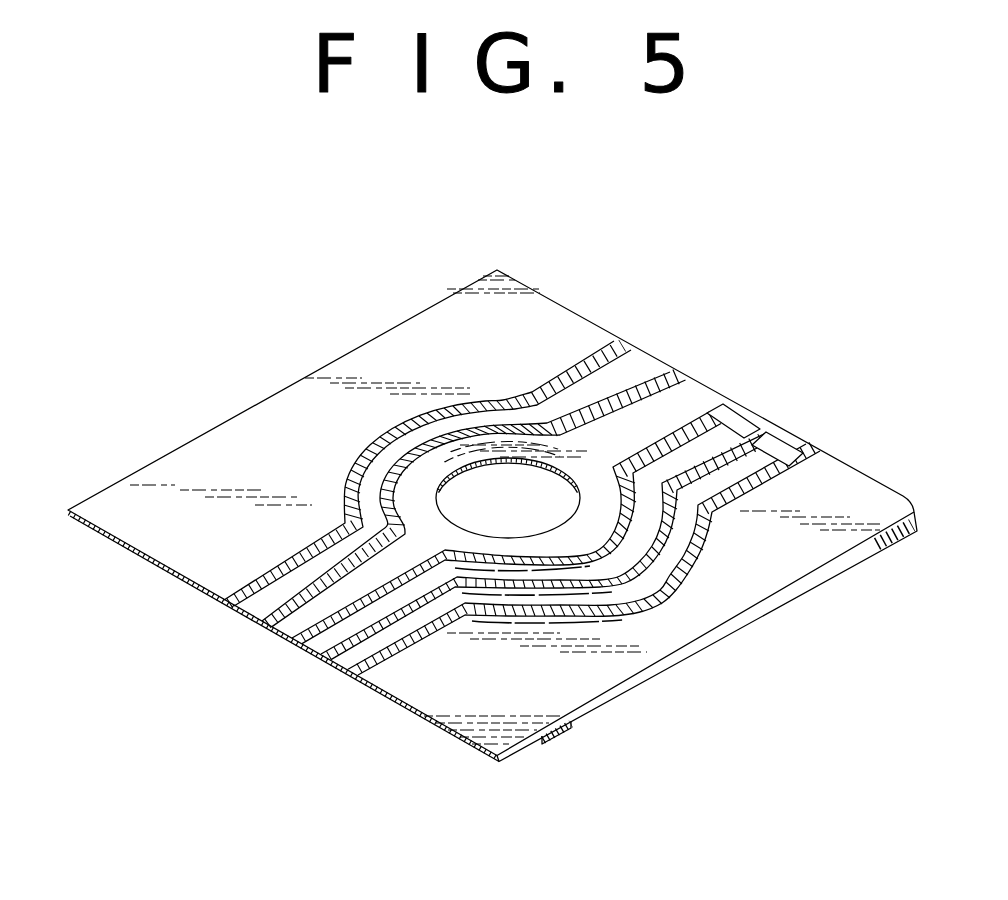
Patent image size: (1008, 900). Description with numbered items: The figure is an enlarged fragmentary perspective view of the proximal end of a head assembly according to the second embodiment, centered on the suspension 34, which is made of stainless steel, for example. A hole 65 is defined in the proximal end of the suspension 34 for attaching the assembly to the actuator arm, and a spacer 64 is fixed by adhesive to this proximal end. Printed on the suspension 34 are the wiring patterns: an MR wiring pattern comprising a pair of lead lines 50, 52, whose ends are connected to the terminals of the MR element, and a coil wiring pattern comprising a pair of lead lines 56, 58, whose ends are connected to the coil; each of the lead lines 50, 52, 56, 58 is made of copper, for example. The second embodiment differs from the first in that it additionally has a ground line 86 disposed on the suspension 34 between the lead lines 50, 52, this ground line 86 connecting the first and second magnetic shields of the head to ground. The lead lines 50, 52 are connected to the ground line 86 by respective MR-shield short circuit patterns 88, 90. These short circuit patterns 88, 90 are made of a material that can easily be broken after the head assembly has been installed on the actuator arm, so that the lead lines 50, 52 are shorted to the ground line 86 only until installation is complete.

The suspension 34 is at (272, 408).
The lead line 50 is at (323, 640).
The lead line 52 is at (395, 660).
The lead line 56 is at (245, 582).
The lead line 58 is at (242, 610).
The spacer 64 is at (660, 675).
The hole 65 is at (488, 473).
The ground line 86 is at (328, 660).
The MR-shield short circuit pattern 88 is at (738, 418).
The MR-shield short circuit pattern 90 is at (782, 447).